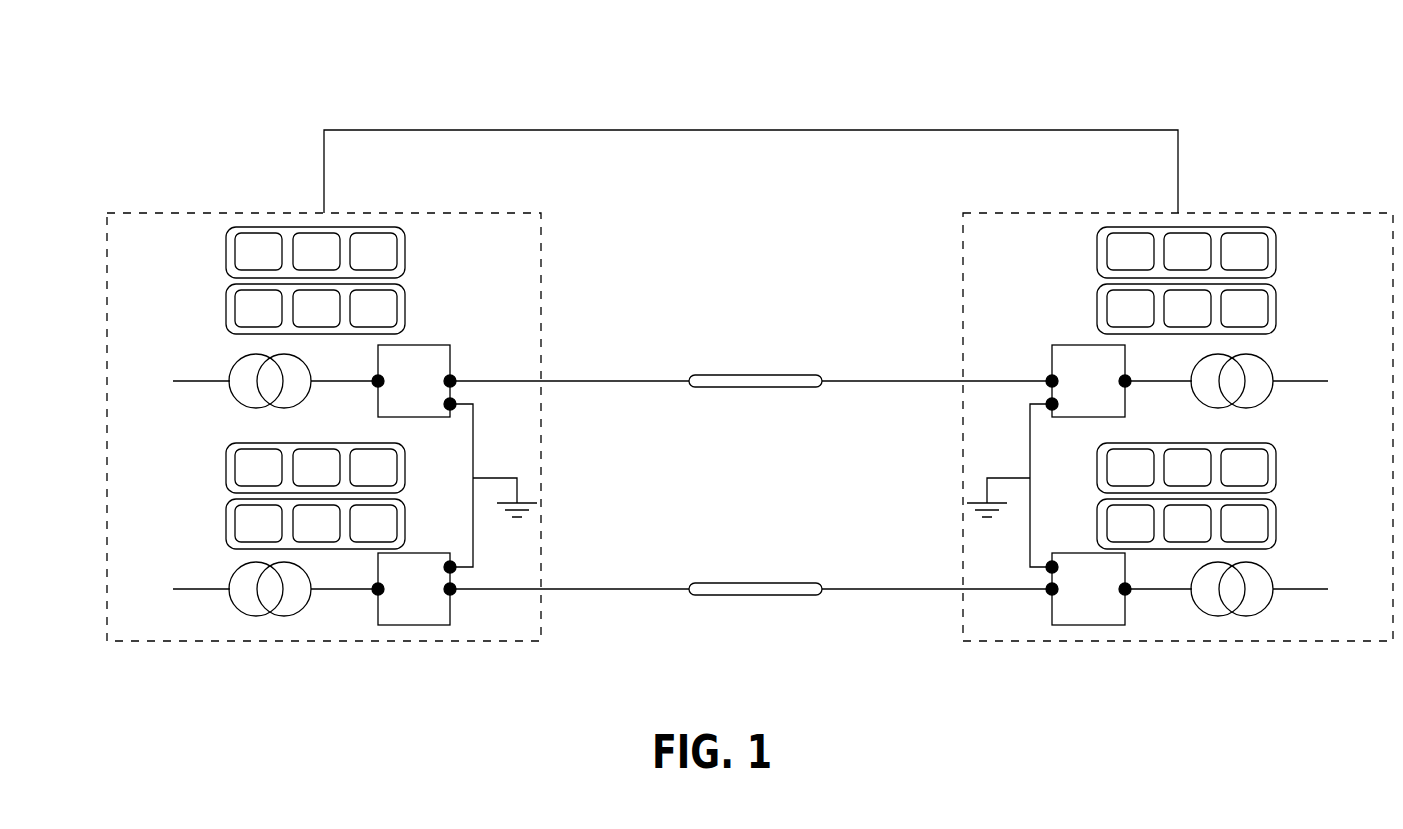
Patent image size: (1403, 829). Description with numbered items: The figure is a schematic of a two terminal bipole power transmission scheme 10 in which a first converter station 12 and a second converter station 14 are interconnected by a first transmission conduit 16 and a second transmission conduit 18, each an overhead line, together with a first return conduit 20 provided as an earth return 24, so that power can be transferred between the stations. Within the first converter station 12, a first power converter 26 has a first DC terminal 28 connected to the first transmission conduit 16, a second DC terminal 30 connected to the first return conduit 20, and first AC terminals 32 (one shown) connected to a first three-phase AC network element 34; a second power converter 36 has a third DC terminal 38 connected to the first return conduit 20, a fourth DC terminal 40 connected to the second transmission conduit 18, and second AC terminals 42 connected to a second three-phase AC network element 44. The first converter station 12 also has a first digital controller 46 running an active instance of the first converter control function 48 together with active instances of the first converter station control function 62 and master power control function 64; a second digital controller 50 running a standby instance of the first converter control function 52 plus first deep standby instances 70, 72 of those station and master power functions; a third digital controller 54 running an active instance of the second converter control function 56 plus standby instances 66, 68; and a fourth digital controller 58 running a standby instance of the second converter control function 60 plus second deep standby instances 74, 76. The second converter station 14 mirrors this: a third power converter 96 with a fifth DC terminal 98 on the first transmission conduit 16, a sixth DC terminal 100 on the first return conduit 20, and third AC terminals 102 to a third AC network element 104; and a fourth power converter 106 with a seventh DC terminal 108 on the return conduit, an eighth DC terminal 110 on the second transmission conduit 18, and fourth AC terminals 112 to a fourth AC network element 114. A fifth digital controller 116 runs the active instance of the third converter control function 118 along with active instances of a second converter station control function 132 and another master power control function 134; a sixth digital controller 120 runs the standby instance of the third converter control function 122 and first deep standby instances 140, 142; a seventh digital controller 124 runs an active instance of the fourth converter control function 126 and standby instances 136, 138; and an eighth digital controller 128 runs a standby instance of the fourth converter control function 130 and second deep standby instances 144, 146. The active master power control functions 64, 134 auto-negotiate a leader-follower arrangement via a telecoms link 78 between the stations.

The bipole power transmission scheme 10 is at (278, 98).
The first converter station 12 is at (479, 211).
The second converter station 14 is at (1020, 211).
The first transmission conduit 16 is at (755, 367).
The second transmission conduit 18 is at (755, 576).
The first return conduit 20 is at (540, 482).
The earth return 24 is at (518, 492).
The first power converter 26 is at (442, 345).
The first DC terminal 28 is at (453, 378).
The second DC terminal 30 is at (456, 381).
The first AC terminals 32 is at (380, 384).
The first three-phase AC network element 34 is at (310, 400).
The second power converter 36 is at (462, 628).
The third DC terminal 38 is at (453, 586).
The fourth DC terminal 40 is at (453, 565).
The second AC terminals 42 is at (452, 613).
The second three-phase AC network element 44 is at (305, 607).
The first digital controller 46 is at (226, 250).
The active instance of the first converter control function 48 is at (258, 251).
The second digital controller 50 is at (226, 306).
The standby instance of the first converter control function 52 is at (258, 308).
The third digital controller 54 is at (226, 465).
The active instance of the second converter control function 56 is at (258, 467).
The fourth digital controller 58 is at (226, 520).
The standby instance of the second converter control function 60 is at (258, 523).
The active instance of the first converter station control function 62 is at (316, 251).
The active instance of the master power control function 64 is at (373, 251).
The standby instance of the first converter station control function 66 is at (316, 467).
The standby instance of the master power control function 68 is at (373, 467).
The first deep standby instance of the first converter station control function 70 is at (316, 308).
The first deep standby instance of the master power control function 72 is at (373, 308).
The second deep standby instance of the first converter station control function 74 is at (316, 523).
The second deep standby instance of the master power control function 76 is at (373, 523).
The telecoms link 78 is at (751, 157).
The third power converter 96 is at (1062, 345).
The fifth DC terminal 98 is at (1049, 378).
The sixth DC terminal 100 is at (1046, 381).
The third AC terminals 102 is at (1123, 384).
The third three-phase AC network element 104 is at (1195, 405).
The fourth power converter 106 is at (1050, 612).
The seventh DC terminal 108 is at (1050, 585).
The eighth DC terminal 110 is at (1050, 553).
The fourth AC terminals 112 is at (1123, 592).
The fourth three-phase AC network element 114 is at (1195, 610).
The fifth digital controller 116 is at (1276, 250).
The module 118 is at (1130, 251).
The sixth digital controller 120 is at (1276, 306).
The module 122 is at (1130, 308).
The seventh digital controller 124 is at (1276, 465).
The active instance of the fourth converter control function 126 is at (1130, 467).
The eighth digital controller 128 is at (1276, 520).
The standby instance of the fourth converter control function 130 is at (1130, 523).
The active instance of the second converter station control function 132 is at (1187, 251).
The active instance of the other master power control function 134 is at (1244, 251).
The standby instance of the second converter station control function 136 is at (1187, 467).
The standby instance of the other master power control function 138 is at (1244, 467).
The first deep standby instance of the second converter station control function 140 is at (1187, 308).
The first deep standby instance of the other master power control function 142 is at (1244, 308).
The second deep standby instance of the second converter station control function 144 is at (1187, 523).
The second deep standby instance of the other master power control function 146 is at (1244, 523).